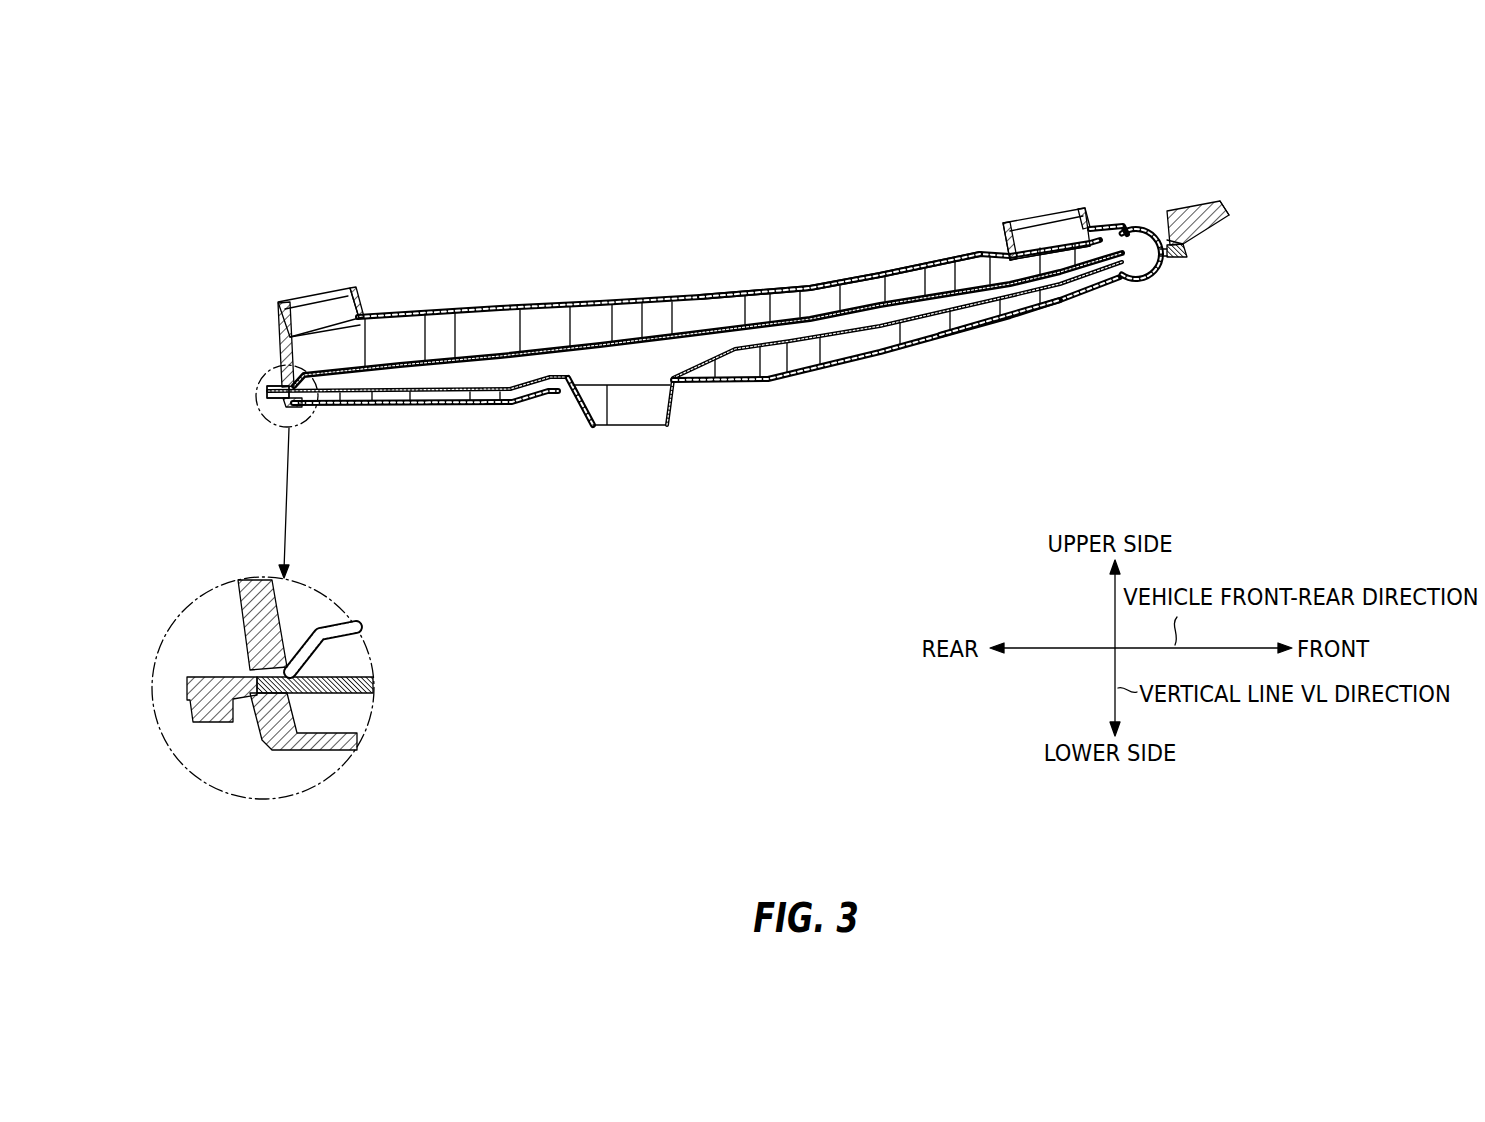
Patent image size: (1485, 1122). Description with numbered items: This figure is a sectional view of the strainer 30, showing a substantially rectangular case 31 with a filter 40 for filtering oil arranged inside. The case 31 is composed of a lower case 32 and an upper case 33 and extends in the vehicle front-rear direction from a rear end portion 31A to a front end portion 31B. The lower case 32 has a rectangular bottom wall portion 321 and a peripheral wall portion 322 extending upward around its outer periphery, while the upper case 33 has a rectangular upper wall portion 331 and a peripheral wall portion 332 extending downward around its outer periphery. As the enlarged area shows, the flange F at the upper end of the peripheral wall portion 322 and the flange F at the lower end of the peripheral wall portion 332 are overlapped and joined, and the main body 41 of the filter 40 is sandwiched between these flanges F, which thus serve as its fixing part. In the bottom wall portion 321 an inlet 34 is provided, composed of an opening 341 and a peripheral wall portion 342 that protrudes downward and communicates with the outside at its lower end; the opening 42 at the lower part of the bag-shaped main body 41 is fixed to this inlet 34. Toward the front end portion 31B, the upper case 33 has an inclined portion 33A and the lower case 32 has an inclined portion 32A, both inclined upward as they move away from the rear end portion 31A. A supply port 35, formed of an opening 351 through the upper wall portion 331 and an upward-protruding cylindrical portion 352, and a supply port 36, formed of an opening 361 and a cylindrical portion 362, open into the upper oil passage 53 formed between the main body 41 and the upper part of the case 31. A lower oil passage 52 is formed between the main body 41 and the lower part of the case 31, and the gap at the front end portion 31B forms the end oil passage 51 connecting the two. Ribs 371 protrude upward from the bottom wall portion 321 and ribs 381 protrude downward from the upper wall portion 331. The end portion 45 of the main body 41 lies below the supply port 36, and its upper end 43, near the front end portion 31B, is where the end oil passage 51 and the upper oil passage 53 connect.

The strainer 30 is at (536, 496).
The case 31 is at (1310, 203).
The rear end portion 31A is at (268, 390).
The front end portion 31B is at (1173, 212).
The lower case 32 is at (1198, 252).
The inclined portion 32A is at (998, 328).
The upper case 33 is at (1198, 239).
The inclined portion 33A is at (942, 276).
The inlet 34 is at (733, 476).
The supply port 35 is at (390, 226).
The supply port 36 is at (1100, 140).
The filter 40 is at (692, 226).
The main body 41 is at (688, 395).
The opening 42 is at (656, 372).
The upper end 43 is at (1120, 234).
The end portion 45 is at (1060, 238).
The end oil passage 51 is at (1137, 268).
The lower oil passage 52 is at (884, 330).
The upper oil passage 53 is at (792, 296).
The bottom wall portion 321 is at (482, 404).
The peripheral wall portion 322 is at (283, 408).
The upper wall portion 331 is at (470, 312).
The peripheral wall portion 332 is at (282, 335).
The opening 341 is at (608, 395).
The peripheral wall portion 342 is at (677, 403).
The opening 351 is at (300, 295).
The cylindrical portion 352 is at (353, 287).
The opening 361 is at (1010, 225).
The cylindrical portion 362 is at (1083, 210).
The rib 371 is at (847, 356).
The rib 381 is at (758, 320).
The flange F is at (186, 688).